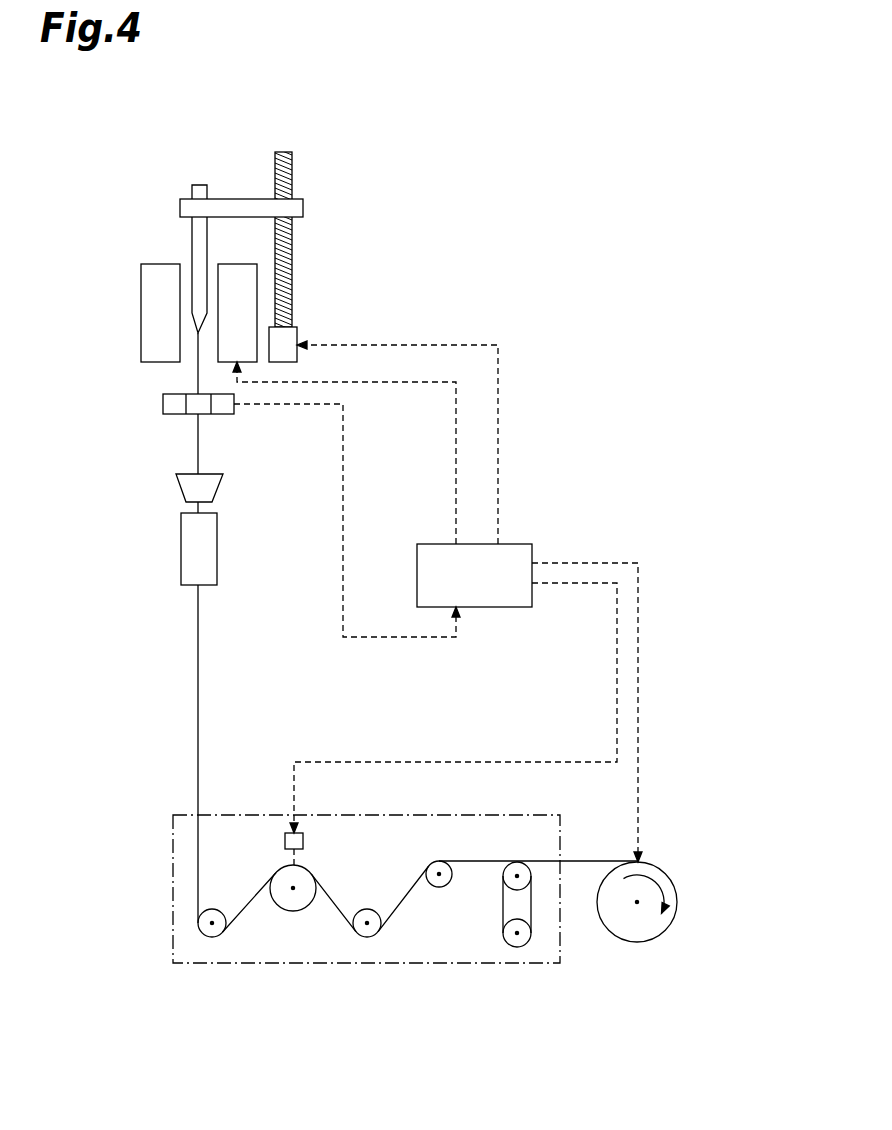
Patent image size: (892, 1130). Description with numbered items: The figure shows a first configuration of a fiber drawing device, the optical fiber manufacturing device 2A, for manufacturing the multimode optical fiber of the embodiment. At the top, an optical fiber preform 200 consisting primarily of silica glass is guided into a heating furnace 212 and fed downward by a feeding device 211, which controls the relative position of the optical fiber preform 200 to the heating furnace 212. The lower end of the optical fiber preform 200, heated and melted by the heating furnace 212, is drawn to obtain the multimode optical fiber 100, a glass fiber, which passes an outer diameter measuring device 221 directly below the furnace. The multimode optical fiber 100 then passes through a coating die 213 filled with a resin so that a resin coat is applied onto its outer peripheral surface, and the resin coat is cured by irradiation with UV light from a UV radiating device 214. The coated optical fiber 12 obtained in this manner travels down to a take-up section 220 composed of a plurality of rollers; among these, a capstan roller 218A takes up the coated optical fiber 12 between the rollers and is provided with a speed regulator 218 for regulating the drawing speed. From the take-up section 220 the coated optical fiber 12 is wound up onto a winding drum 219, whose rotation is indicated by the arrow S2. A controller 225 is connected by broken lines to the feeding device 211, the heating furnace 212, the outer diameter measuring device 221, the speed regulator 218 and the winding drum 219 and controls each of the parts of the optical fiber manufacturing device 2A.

The optical fiber preform 200 is at (195, 237).
The heating furnace 212 is at (141, 284).
The feeding device 211 is at (310, 302).
The multimode optical fiber 100 is at (198, 378).
The outer diameter measuring device 221 is at (163, 406).
The coating die 213 is at (185, 490).
The UV radiating device 214 is at (185, 550).
The coated optical fiber 12 is at (198, 734).
The controller 225 is at (520, 544).
The speed regulator 218 is at (303, 841).
The capstan roller 218A is at (272, 905).
The take-up section 220 is at (398, 963).
The winding drum 219 is at (675, 860).
The rotation direction S2 is at (673, 890).
The optical fiber manufacturing device 2A is at (616, 379).